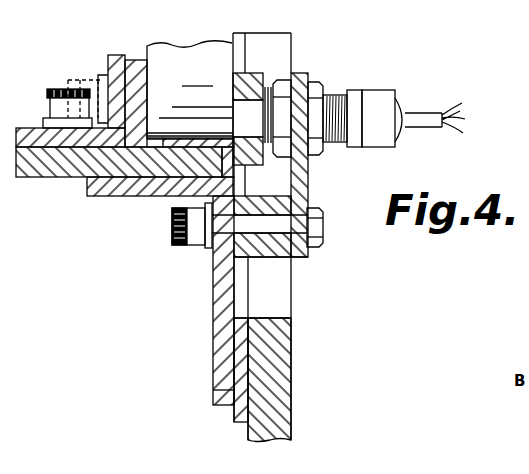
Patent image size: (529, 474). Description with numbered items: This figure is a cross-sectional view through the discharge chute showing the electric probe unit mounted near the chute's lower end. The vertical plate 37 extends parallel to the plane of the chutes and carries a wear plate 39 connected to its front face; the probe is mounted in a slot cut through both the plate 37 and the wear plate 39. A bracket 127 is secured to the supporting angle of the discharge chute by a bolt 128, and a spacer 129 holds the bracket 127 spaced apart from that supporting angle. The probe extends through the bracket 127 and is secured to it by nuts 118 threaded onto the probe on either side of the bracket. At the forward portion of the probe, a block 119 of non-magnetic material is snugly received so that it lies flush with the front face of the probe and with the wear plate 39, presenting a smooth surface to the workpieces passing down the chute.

The block of non-magnetic material 119 is at (253, 73).
The nuts 118 is at (281, 113).
The bracket 127 is at (309, 190).
The bolt 128 is at (324, 237).
The spacer 129 is at (293, 263).
The wear plate 39 is at (242, 362).
The vertical plate 37 is at (293, 395).